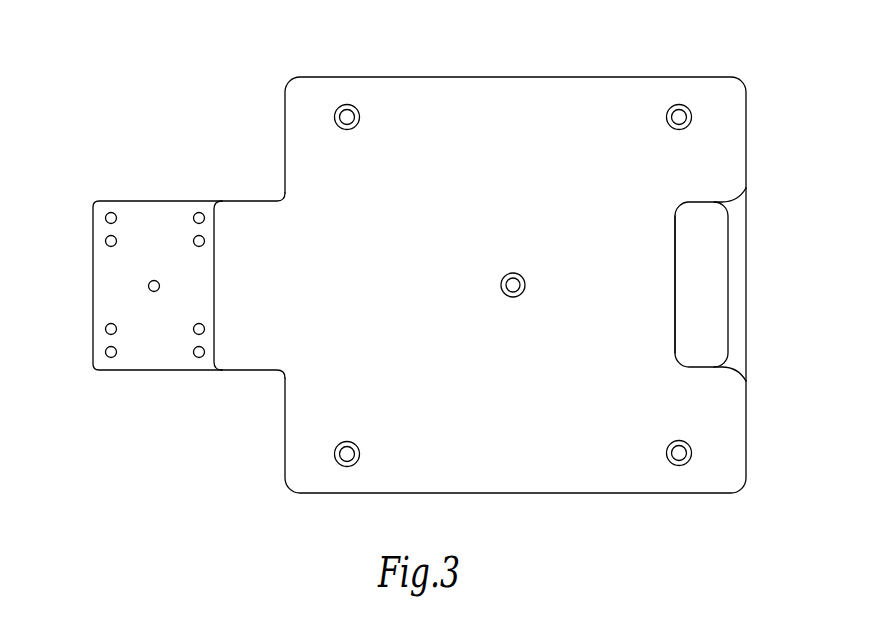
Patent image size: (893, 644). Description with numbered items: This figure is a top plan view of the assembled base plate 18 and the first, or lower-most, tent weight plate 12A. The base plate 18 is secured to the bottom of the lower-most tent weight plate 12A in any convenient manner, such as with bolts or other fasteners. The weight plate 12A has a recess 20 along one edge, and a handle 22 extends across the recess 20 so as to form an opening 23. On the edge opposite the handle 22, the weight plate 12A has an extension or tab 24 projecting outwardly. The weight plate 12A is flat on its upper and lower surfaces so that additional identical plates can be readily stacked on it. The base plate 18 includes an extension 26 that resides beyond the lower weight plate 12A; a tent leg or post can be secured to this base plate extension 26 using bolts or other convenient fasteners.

The lower-most tent weight plate 12A is at (488, 88).
The base plate 18 is at (110, 277).
The recess 20 is at (676, 286).
The handle 22 is at (740, 259).
The opening 23 is at (666, 235).
The extension or tab 24 is at (253, 218).
The extension 26 is at (148, 218).